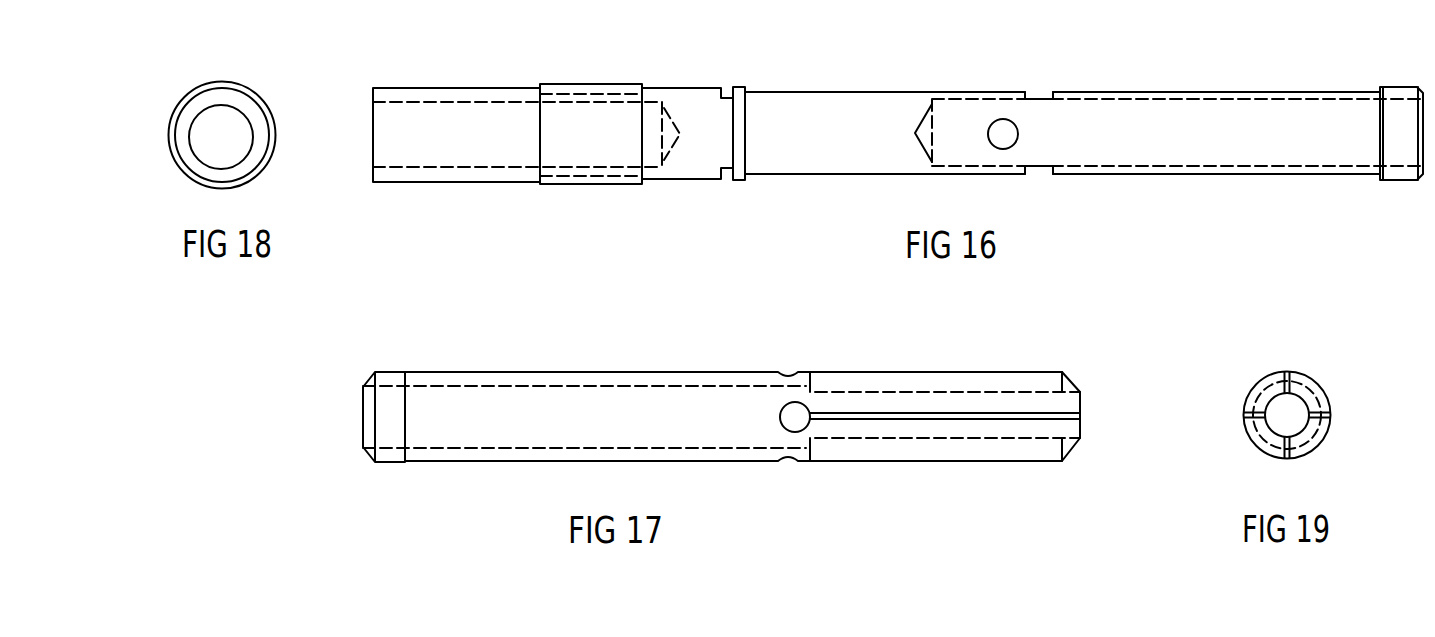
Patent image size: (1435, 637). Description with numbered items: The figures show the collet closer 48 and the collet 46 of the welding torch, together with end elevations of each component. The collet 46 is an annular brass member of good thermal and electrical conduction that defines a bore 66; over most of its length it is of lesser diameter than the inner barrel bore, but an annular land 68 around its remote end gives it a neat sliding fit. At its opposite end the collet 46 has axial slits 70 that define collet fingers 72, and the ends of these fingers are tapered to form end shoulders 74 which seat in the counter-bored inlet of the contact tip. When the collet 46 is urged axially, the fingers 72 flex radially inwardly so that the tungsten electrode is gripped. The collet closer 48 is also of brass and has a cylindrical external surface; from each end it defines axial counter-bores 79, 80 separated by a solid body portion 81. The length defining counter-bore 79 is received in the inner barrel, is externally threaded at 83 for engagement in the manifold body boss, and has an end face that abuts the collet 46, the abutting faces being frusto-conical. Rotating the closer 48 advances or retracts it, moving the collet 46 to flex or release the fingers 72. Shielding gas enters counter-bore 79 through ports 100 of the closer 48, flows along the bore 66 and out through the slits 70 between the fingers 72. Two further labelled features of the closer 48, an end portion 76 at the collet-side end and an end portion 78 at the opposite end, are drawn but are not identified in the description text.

In FIG. 17, the collet 46 is at (569, 369).
In FIG. 16, the collet closer 48 is at (774, 91).
In FIG. 19, the bore 66 is at (1284, 406).
In FIG. 17, the annular land 68 is at (388, 372).
In FIG. 17, the axial slits 70 is at (883, 413).
In FIG. 19, the axial slits 70 is at (1287, 371).
In FIG. 17, the collet fingers 72 is at (1005, 452).
In FIG. 19, the collet fingers 72 is at (1252, 383).
In FIG. 17, the end shoulders 74 is at (1070, 380).
In FIG. 16, the socket end portion 76 is at (688, 181).
In FIG. 16, the end cap 78 is at (1400, 87).
In FIG. 16, the counter-bore 79 is at (1202, 163).
In FIG. 18, the counter-bore 80 is at (216, 99).
In FIG. 16, the counter-bore 80 is at (412, 163).
In FIG. 16, the solid body portion 81 is at (820, 158).
In FIG. 16, the external thread 83 is at (642, 76).
In FIG. 16, the ports 100 is at (1037, 92).